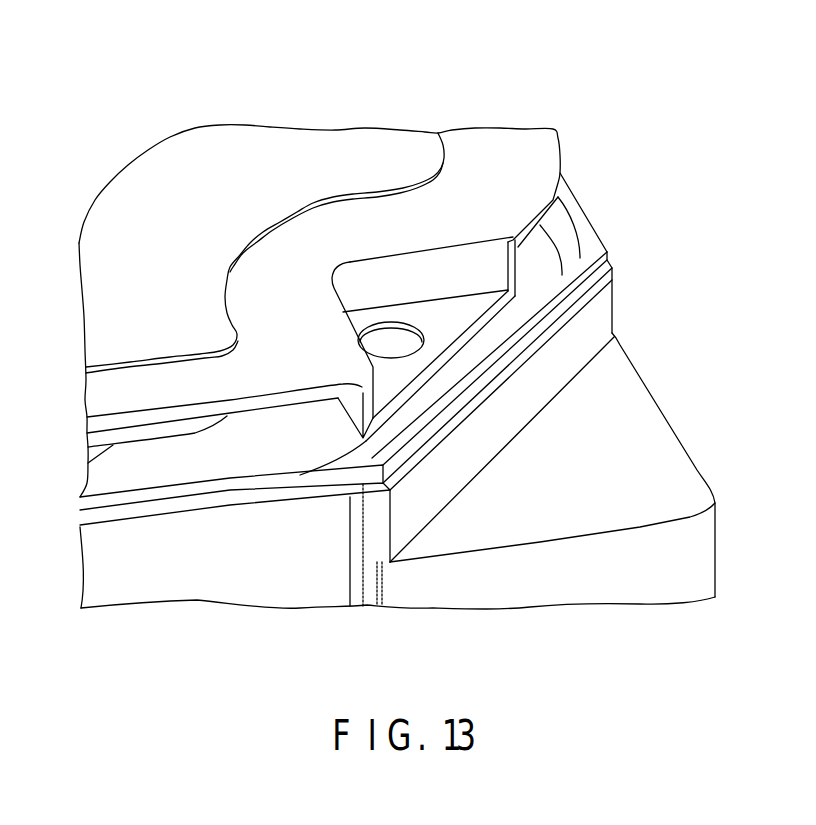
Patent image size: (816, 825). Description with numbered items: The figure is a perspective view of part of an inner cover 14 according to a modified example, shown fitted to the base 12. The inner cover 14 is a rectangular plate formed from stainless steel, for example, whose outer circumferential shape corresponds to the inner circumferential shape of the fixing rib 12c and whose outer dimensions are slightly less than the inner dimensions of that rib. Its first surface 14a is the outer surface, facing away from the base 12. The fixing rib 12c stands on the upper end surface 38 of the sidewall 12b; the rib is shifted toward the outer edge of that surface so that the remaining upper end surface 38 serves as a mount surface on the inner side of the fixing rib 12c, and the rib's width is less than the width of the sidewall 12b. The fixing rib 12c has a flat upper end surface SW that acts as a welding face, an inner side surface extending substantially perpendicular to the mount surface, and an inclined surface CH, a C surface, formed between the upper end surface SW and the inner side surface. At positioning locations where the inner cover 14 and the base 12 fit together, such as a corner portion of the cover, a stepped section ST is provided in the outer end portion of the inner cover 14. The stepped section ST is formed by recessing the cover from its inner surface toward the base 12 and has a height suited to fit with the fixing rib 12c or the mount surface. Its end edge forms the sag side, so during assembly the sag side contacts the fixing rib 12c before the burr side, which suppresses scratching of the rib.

The base 12 is at (314, 590).
The sidewall 12b is at (197, 592).
The fixing rib 12c is at (417, 423).
The inner cover 14 is at (385, 154).
The first surface 14a is at (250, 160).
The upper end surface 38 is at (283, 445).
The stepped section ST is at (447, 320).
The upper end surface SW is at (592, 237).
The inclined surface CH is at (566, 219).